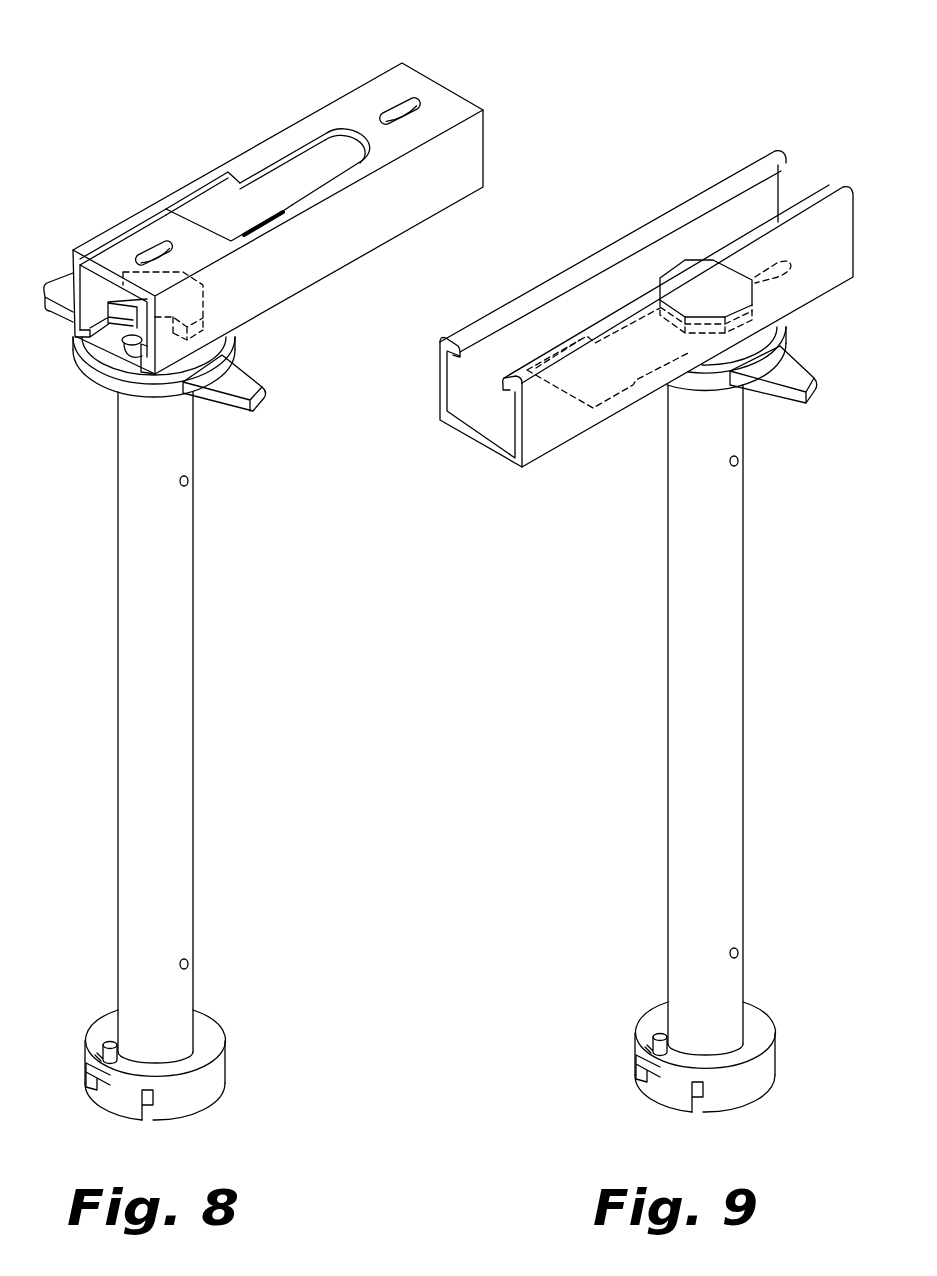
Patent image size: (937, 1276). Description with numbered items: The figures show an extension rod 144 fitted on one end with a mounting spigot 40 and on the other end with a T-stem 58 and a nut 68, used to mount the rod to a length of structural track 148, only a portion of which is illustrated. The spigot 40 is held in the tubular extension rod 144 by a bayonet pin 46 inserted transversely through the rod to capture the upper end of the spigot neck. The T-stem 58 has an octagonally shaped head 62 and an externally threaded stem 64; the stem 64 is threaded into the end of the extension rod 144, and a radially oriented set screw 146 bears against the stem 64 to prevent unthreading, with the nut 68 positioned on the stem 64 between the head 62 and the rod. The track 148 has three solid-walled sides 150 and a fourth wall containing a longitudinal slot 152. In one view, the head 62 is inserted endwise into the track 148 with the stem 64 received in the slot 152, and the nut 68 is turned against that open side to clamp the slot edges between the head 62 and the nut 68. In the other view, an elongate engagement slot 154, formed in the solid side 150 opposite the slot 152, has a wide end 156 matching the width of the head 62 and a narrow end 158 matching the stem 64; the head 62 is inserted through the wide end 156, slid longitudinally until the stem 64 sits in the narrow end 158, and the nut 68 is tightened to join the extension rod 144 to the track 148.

In FIG. 8, the mounting spigot 40 is at (218, 1067).
In FIG. 9, the mounting spigot 40 is at (768, 1057).
In FIG. 8, the bayonet pin 46 is at (189, 965).
In FIG. 9, the bayonet pin 46 is at (739, 955).
In FIG. 8, the T-stem 58 is at (111, 323).
In FIG. 9, the T-stem 58 is at (680, 258).
In FIG. 8, the head 62 is at (117, 296).
In FIG. 8, the stem 64 is at (125, 340).
In FIG. 8, the nut 68 is at (95, 372).
In FIG. 9, the nut 68 is at (787, 372).
In FIG. 8, the extension rod 144 is at (183, 600).
In FIG. 9, the extension rod 144 is at (735, 592).
In FIG. 8, the set screw 146 is at (188, 484).
In FIG. 9, the set screw 146 is at (738, 465).
In FIG. 8, the structural track 148 is at (386, 86).
In FIG. 8, the solid-walled sides 150 is at (193, 177).
In FIG. 9, the solid-walled sides 150 is at (460, 384).
In FIG. 8, the longitudinal slot 152 is at (130, 353).
In FIG. 9, the longitudinal slot 152 is at (475, 342).
In FIG. 8, the engagement slot 154 is at (286, 144).
In FIG. 9, the engagement slot 154 is at (635, 403).
In FIG. 8, the wide end 156 is at (168, 201).
In FIG. 9, the wide end 156 is at (562, 350).
In FIG. 8, the narrow end 158 is at (323, 132).
In FIG. 9, the narrow end 158 is at (628, 327).